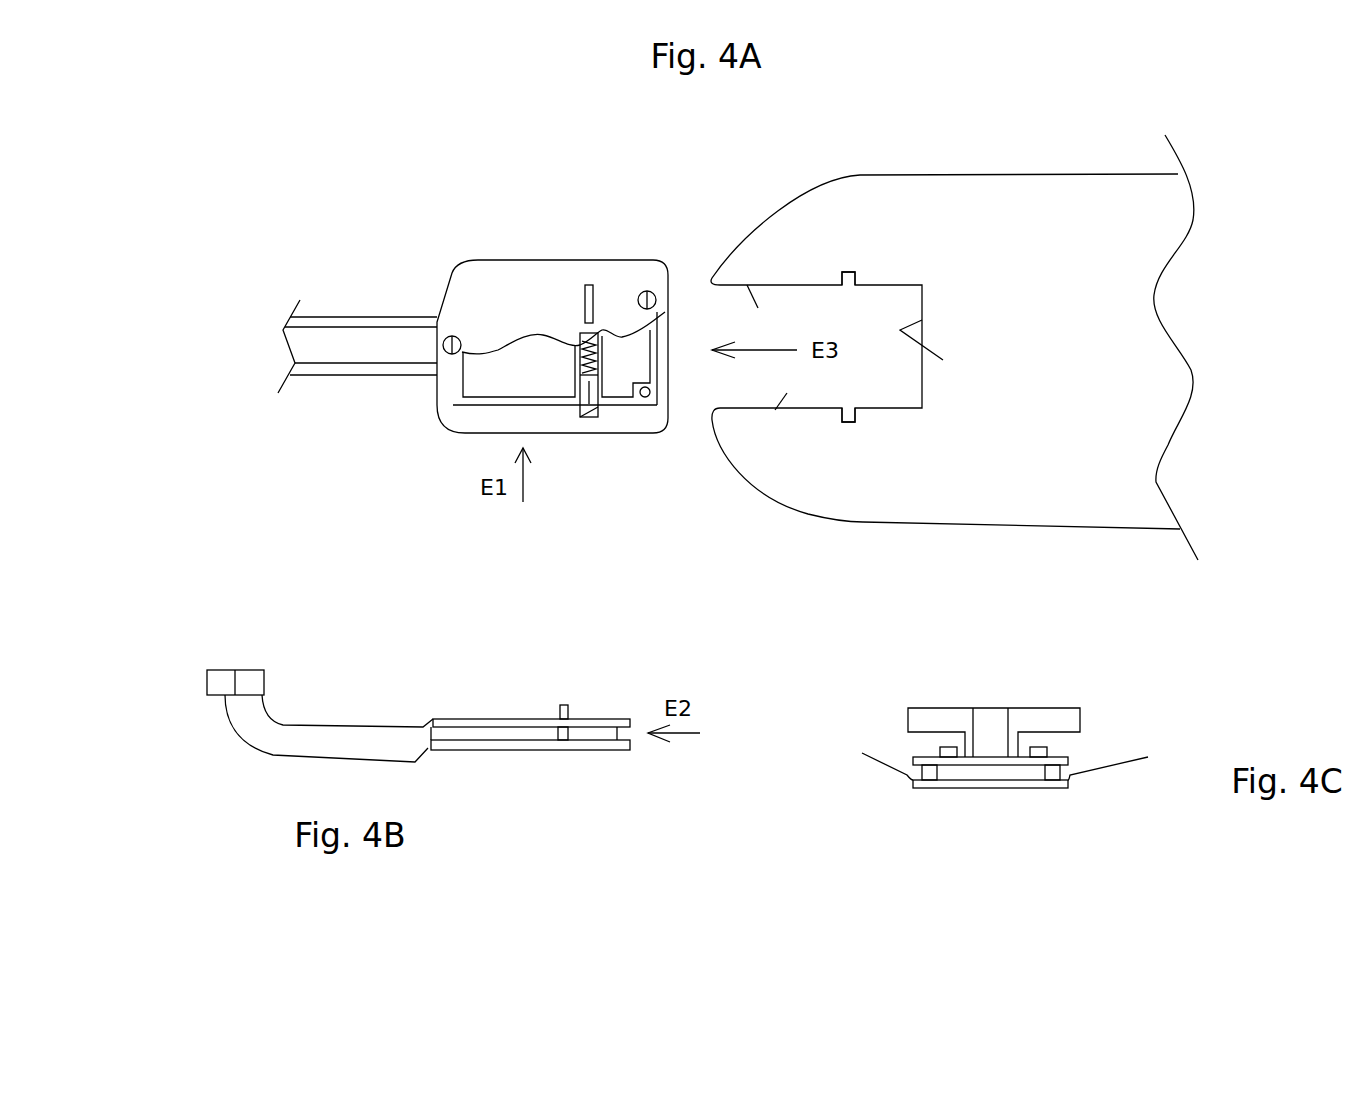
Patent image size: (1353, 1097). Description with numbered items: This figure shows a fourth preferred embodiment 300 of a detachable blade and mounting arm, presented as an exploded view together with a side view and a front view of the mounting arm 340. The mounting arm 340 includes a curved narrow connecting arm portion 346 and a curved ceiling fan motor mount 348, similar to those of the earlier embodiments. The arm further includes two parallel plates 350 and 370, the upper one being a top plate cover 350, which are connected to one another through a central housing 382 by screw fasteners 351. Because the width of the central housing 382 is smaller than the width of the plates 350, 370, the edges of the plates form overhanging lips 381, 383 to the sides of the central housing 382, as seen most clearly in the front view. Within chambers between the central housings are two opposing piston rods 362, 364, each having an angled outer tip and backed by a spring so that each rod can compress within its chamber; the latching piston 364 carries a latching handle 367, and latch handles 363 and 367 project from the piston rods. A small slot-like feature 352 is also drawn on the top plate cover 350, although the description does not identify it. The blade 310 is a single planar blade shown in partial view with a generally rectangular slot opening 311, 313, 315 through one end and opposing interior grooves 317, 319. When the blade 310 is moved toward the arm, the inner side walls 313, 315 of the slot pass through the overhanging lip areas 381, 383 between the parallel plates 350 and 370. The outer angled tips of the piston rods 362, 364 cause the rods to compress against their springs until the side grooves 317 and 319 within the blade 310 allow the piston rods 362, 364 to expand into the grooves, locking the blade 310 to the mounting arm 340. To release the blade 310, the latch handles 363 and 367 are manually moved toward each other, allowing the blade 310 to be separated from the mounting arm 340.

In FIG. 4A, the fourth preferred embodiment 300 is at (730, 188).
In FIG. 4A, the detachable blade 310 is at (1052, 217).
In FIG. 4A, the slot opening 311 is at (948, 350).
In FIG. 4A, the inner side wall of slot 313 is at (779, 393).
In FIG. 4A, the inner side wall of slot 315 is at (750, 308).
In FIG. 4A, the interior groove 317 is at (850, 270).
In FIG. 4A, the interior groove 319 is at (850, 425).
In FIG. 4A, the mounting arm 340 is at (420, 223).
In FIG. 4C, the mounting arm 340 is at (984, 692).
In FIG. 4A, the curved narrow connecting arm portion 346 is at (320, 338).
In FIG. 4B, the curved narrow connecting arm portion 346 is at (330, 740).
In FIG. 4B, the curved ceiling fan motor mount 348 is at (215, 677).
In FIG. 4C, the curved ceiling fan motor mount 348 is at (1047, 715).
In FIG. 4A, the top plate cover 350 is at (515, 310).
In FIG. 4B, the top plate cover 350 is at (487, 719).
In FIG. 4C, the top plate cover 350 is at (962, 748).
In FIG. 4A, the screw fasteners 351 is at (439, 353).
In FIG. 4A, the slot 352 is at (577, 300).
In FIG. 4C, the piston rod 362 is at (1045, 773).
In FIG. 4C, the latch handle 363 is at (1030, 752).
In FIG. 4A, the latching piston 364 is at (585, 413).
In FIG. 4B, the latching piston 364 is at (555, 737).
In FIG. 4C, the latching piston 364 is at (924, 777).
In FIG. 4B, the latching handle 367 is at (552, 707).
In FIG. 4C, the latching handle 367 is at (937, 750).
In FIG. 4A, the parallel plate 370 is at (557, 423).
In FIG. 4B, the parallel plate 370 is at (472, 753).
In FIG. 4C, the parallel plate 370 is at (1015, 788).
In FIG. 4C, the overhanging lip 381 is at (865, 759).
In FIG. 4C, the central housing 382 is at (987, 773).
In FIG. 4C, the overhanging lip 383 is at (1132, 763).